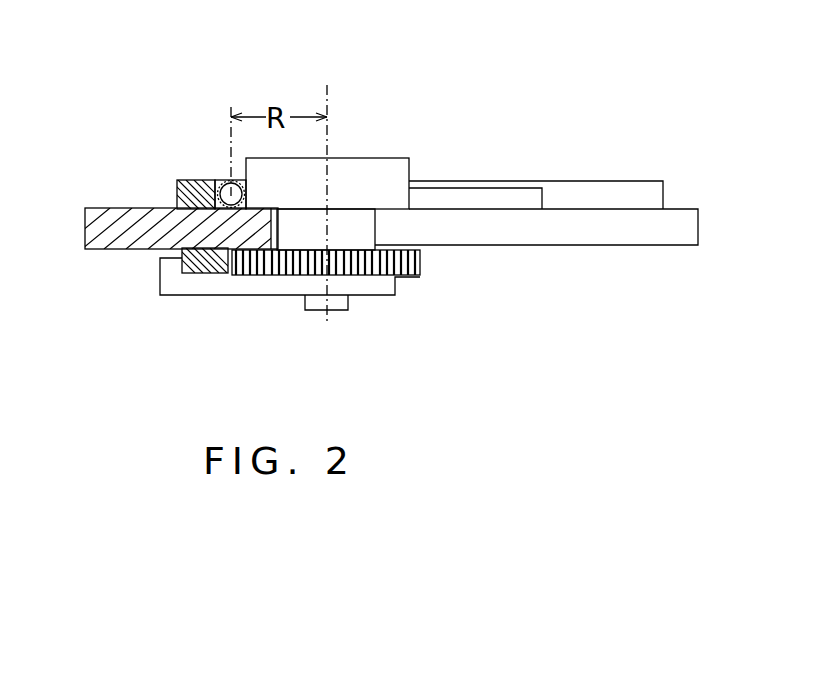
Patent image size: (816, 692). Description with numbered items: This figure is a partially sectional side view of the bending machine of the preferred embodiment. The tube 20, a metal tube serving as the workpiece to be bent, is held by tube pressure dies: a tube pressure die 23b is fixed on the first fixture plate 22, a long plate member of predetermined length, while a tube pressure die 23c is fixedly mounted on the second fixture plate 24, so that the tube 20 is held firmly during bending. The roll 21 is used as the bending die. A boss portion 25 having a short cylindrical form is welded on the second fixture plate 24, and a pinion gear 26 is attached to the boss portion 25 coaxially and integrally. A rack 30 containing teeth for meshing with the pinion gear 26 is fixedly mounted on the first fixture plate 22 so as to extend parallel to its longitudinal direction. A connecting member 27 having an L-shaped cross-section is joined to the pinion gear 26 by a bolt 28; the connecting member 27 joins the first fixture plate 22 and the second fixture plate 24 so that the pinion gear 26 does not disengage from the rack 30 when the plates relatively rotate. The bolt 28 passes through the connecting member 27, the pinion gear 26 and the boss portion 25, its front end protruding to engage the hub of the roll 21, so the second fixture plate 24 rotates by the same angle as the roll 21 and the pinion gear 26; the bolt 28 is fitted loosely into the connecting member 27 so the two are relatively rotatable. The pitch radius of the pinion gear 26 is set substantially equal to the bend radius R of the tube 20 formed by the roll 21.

The tube 20 is at (227, 179).
The roll 21 is at (375, 157).
The first fixture plate 22 is at (132, 209).
The tube pressure die 23b is at (185, 183).
The tube pressure die 23c is at (515, 193).
The second fixture plate 24 is at (588, 242).
The boss portion 25 is at (370, 224).
The pinion gear 26 is at (382, 272).
The connecting member 27 is at (225, 288).
The bolt 28 is at (333, 310).
The rack 30 is at (202, 267).